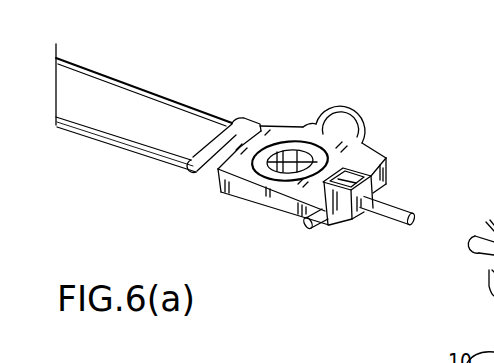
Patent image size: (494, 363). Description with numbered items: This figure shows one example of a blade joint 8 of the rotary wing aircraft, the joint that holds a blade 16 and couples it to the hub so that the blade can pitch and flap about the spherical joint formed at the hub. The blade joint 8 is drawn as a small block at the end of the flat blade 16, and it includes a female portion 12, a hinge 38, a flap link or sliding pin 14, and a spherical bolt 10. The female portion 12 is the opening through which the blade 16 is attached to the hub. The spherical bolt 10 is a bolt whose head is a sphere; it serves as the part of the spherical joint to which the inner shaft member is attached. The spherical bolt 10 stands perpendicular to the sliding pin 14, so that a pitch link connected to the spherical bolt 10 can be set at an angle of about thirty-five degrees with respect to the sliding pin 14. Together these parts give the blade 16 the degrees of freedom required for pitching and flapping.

The blade joint 8 is at (219, 207).
The spherical bolt 10 is at (338, 107).
The female portion 12 is at (287, 158).
The sliding pin 14 is at (380, 213).
The blade 16 is at (128, 123).
The hinge 38 is at (378, 191).